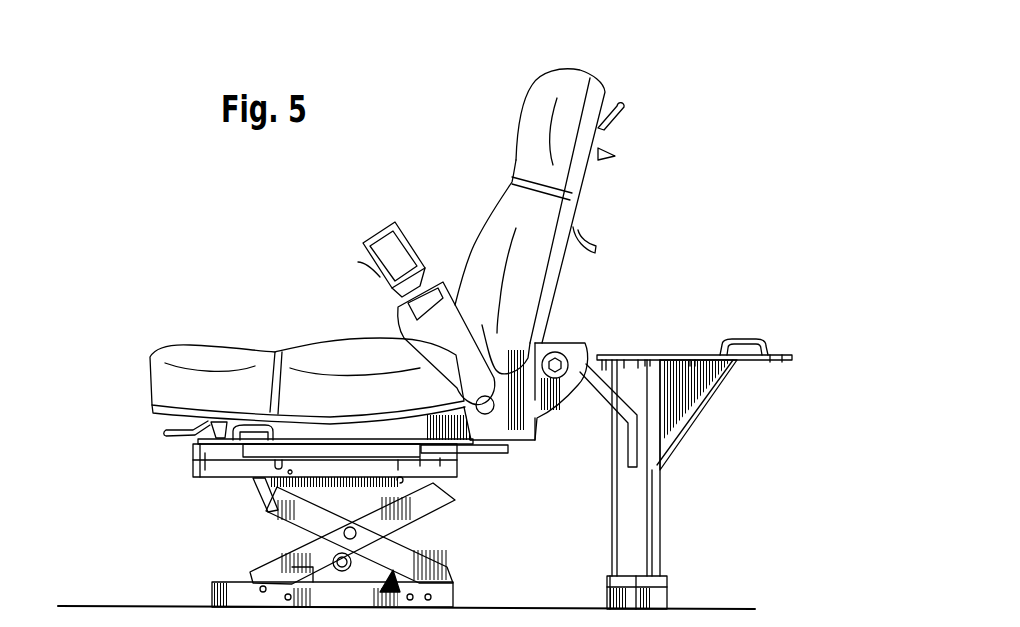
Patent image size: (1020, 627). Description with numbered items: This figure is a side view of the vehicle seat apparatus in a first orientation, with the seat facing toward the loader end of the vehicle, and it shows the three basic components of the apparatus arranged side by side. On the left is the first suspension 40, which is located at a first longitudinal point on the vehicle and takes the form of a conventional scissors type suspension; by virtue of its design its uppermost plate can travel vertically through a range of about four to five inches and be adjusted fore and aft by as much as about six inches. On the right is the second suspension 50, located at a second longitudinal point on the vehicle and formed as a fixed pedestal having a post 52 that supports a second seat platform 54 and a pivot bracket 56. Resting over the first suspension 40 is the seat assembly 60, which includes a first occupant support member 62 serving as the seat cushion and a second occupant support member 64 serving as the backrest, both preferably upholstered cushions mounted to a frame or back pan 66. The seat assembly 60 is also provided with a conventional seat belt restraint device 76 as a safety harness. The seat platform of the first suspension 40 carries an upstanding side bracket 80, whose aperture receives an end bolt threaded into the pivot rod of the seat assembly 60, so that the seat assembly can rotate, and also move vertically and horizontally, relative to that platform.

The first suspension 40 is at (220, 544).
The second suspension 50 is at (714, 442).
The post 52 is at (614, 521).
The second seat platform 54 is at (687, 357).
The pivot bracket 56 is at (590, 393).
The seat assembly 60 is at (588, 67).
The first occupant support member 62 is at (222, 360).
The second occupant support member 64 is at (528, 147).
The back pan 66 is at (578, 204).
The seat belt restraint device 76 is at (375, 283).
The upstanding side bracket 80 is at (520, 425).